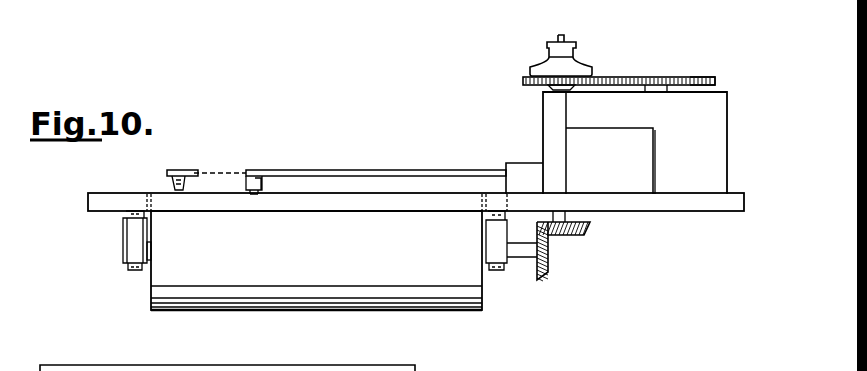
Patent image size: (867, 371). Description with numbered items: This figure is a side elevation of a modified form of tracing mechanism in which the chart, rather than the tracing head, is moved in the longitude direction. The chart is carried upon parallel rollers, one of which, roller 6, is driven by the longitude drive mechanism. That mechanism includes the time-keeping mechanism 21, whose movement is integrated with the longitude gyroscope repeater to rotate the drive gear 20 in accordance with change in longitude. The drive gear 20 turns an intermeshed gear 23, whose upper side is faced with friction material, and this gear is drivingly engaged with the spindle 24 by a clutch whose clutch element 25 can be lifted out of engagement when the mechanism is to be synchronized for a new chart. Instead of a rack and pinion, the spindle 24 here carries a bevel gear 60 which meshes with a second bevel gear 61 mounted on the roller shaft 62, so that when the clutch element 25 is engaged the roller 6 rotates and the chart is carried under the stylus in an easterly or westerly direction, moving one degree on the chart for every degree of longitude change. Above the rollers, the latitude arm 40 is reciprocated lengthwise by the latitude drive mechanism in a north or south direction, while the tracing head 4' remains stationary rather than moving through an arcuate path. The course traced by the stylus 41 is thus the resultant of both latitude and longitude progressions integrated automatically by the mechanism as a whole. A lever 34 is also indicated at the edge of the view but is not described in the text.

The roller 6 is at (471, 272).
The drive gear 20 is at (700, 77).
The time-keeping mechanism 21 is at (635, 143).
The intermeshed gear 23 is at (523, 81).
The spindle 24 is at (565, 36).
The clutch element 25 is at (548, 64).
The lever 34 is at (640, 0).
The tracing head 4' is at (524, 178).
The latitude arm 40 is at (318, 172).
The stylus 41 is at (248, 190).
The bevel gear 60 is at (583, 229).
The second bevel gear 61 is at (548, 272).
The roller shaft 62 is at (525, 258).